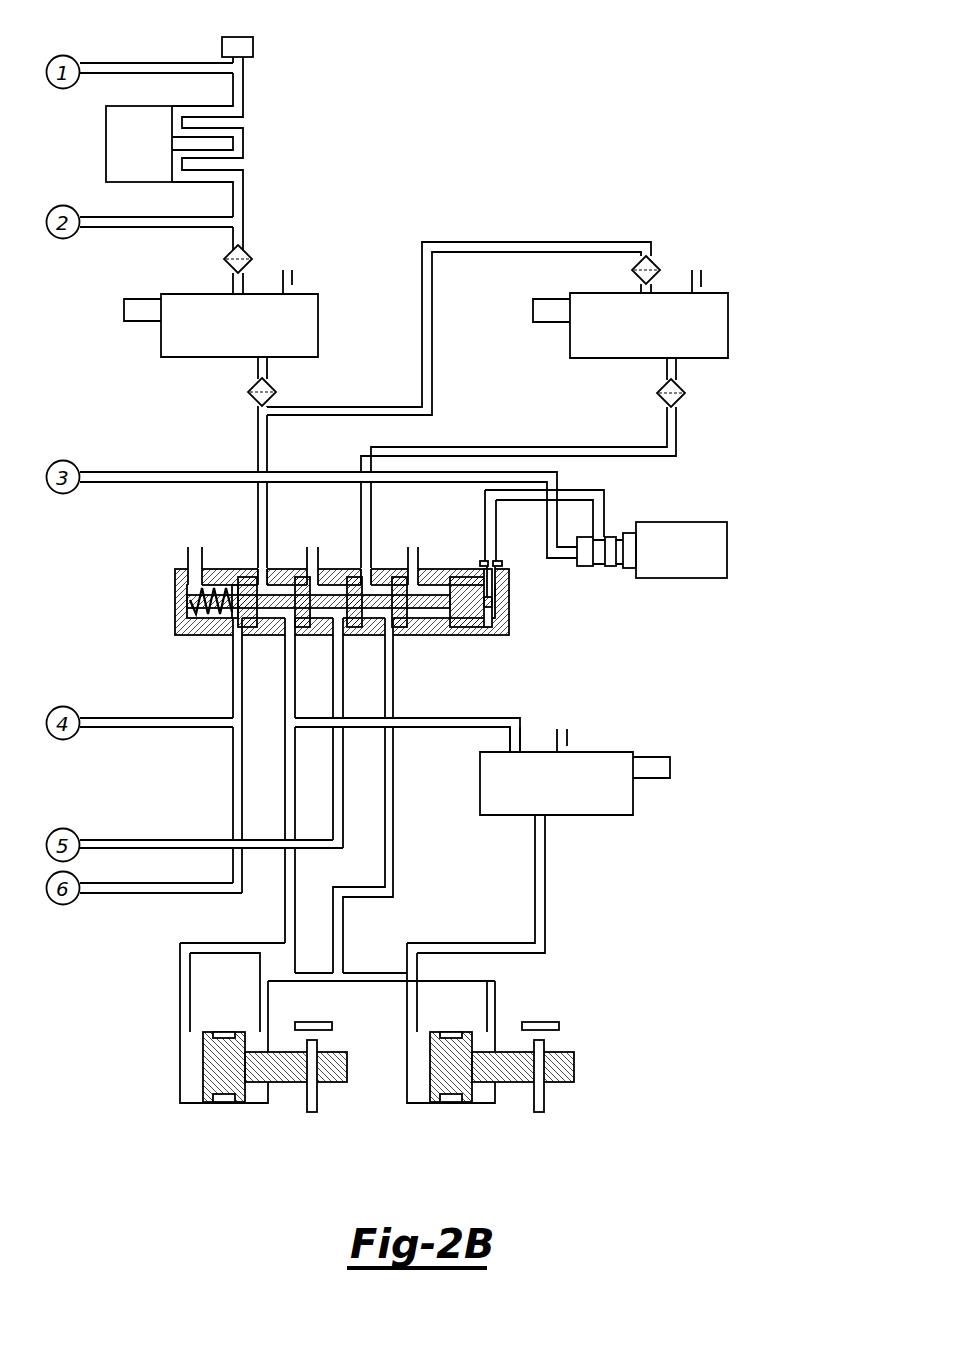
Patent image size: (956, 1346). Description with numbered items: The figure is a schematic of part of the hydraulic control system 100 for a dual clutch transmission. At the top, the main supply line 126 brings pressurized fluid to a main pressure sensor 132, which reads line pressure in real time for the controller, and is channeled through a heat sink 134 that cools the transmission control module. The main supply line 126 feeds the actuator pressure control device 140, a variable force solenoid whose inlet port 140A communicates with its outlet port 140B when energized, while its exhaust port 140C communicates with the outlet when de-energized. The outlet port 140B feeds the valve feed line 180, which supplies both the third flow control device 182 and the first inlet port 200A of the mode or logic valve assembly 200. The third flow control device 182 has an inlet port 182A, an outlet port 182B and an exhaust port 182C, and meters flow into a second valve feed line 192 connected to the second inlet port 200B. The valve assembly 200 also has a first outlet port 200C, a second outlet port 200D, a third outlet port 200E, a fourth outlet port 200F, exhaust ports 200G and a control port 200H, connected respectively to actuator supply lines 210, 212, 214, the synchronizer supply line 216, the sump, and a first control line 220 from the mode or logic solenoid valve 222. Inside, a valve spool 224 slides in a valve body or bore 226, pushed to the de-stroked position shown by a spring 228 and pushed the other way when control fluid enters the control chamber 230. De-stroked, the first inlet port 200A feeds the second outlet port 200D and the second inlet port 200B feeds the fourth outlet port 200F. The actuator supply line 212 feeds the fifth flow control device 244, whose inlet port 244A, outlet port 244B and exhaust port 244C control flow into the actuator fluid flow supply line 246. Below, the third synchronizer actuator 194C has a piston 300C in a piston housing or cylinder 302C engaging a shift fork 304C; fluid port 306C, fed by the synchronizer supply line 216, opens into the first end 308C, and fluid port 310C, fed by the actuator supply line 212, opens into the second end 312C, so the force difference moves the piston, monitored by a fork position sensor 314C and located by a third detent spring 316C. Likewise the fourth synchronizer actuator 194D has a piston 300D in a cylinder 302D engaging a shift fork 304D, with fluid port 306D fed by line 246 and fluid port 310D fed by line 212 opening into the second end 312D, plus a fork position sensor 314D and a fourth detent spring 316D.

The hydraulic control system 100 is at (657, 172).
The main supply line 126 is at (110, 62).
The main pressure sensor 132 is at (254, 46).
The heat sink 134 is at (156, 156).
The actuator pressure control device 140 is at (318, 326).
The inlet port 140A is at (235, 292).
The outlet port 140B is at (258, 370).
The exhaust port 140C is at (295, 287).
The valve feed line 180 is at (465, 242).
The third flow control device 182 is at (728, 330).
The inlet port 182A is at (641, 292).
The outlet port 182B is at (667, 370).
The exhaust port 182C is at (703, 287).
The valve feed line 192 is at (522, 447).
The mode or logic valve assembly 200 is at (346, 590).
The first inlet port 200A is at (262, 567).
The second inlet port 200B is at (366, 567).
The first outlet port 200C is at (236, 640).
The second outlet port 200D is at (290, 640).
The third outlet port 200E is at (340, 640).
The fourth outlet port 200F is at (390, 640).
The exhaust ports 200G is at (188, 560).
The control port 200H is at (485, 560).
The actuator supply line 210 is at (233, 778).
The actuator supply line 212 is at (442, 735).
The actuator supply line 214 is at (122, 840).
The synchronizer supply line 216 is at (343, 825).
The first control line 220 is at (604, 495).
The mode or logic solenoid valve 222 is at (727, 545).
The valve spool 224 is at (200, 600).
The valve body or bore 226 is at (440, 610).
The spring 228 is at (200, 618).
The control chamber 230 is at (490, 612).
The fifth flow control device 244 is at (633, 795).
The inlet port 244A is at (520, 745).
The outlet port 244B is at (545, 830).
The exhaust port 244C is at (568, 742).
The actuator fluid flow supply line 246 is at (545, 905).
The third synchronizer actuator 194C is at (237, 1075).
The fourth synchronizer actuator 194D is at (458, 1075).
The piston 300C is at (217, 1045).
The piston 300D is at (458, 1045).
The piston housing or cylinder 302C is at (180, 1100).
The piston housing or cylinder 302D is at (410, 1100).
The shift fork 304C is at (312, 1112).
The shift fork 304D is at (540, 1112).
The fluid port 306C is at (183, 990).
The fluid port 306D is at (397, 990).
The first end 308C is at (180, 1060).
The fluid port 310C is at (262, 995).
The fluid port 310D is at (520, 982).
The second end 312C is at (265, 1103).
The second end 312D is at (492, 1103).
The fork position sensor 314C is at (335, 1012).
The fork position sensor 314D is at (565, 1012).
The third detent spring 316C is at (226, 1103).
The fourth detent spring 316D is at (452, 1103).